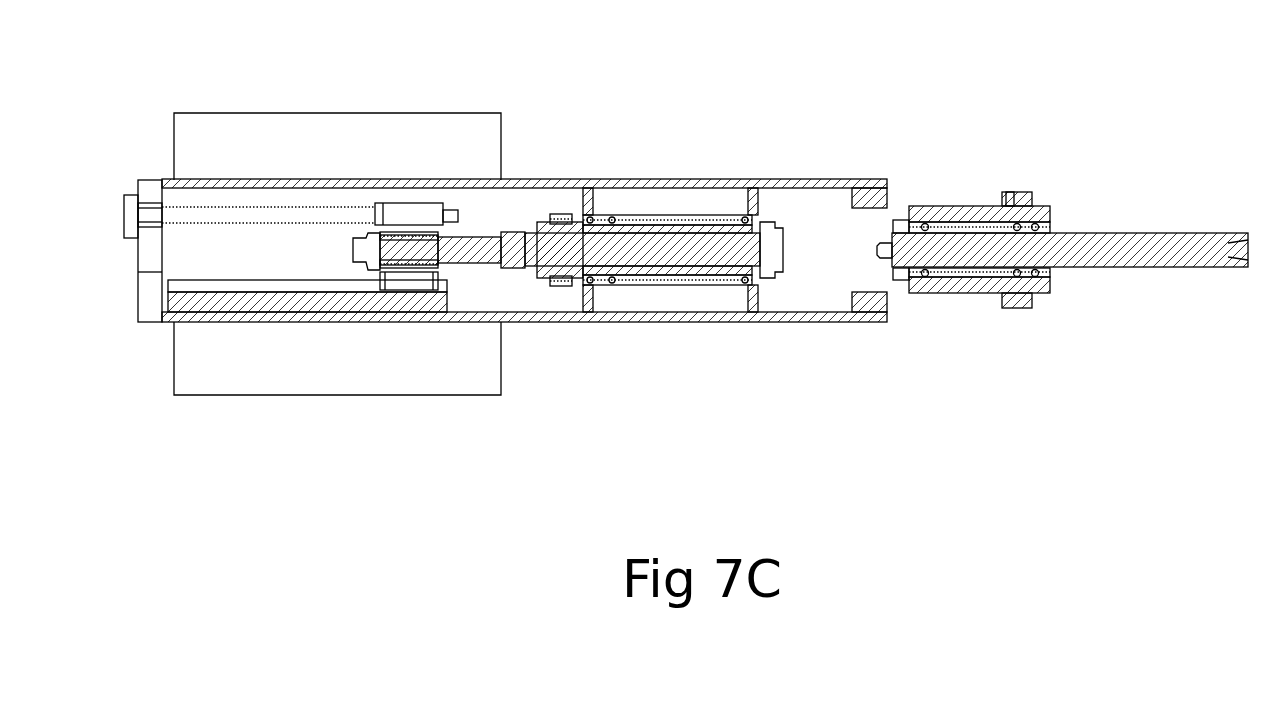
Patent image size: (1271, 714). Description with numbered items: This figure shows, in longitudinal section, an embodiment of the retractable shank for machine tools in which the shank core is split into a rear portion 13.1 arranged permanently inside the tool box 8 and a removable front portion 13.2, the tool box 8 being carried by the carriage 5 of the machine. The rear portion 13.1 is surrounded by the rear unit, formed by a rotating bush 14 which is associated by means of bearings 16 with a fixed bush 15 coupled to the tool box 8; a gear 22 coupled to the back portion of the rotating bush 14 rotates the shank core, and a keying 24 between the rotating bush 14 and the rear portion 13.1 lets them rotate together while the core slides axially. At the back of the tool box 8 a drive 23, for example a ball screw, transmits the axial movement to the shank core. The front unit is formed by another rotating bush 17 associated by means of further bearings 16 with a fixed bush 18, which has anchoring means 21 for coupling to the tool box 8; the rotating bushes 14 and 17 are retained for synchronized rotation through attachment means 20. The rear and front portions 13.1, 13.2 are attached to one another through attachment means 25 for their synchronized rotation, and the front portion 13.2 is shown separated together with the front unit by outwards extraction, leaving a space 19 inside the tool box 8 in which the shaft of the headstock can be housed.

The carriage 5 is at (333, 145).
The tool box 8 is at (750, 313).
The rear portion 13.1 is at (665, 250).
The front portion 13.2 is at (1083, 256).
The rotating bush 14 is at (655, 232).
The fixed bush 15 is at (702, 215).
The bearings 16 is at (979, 349).
The rotating bush 17 is at (975, 222).
The fixed bush 18 is at (1040, 207).
The space 19 is at (820, 258).
The attachment means 20 is at (900, 231).
The anchoring means 21 is at (1011, 195).
The gear 22 is at (560, 213).
The drive 23 is at (235, 213).
The keying 24 is at (560, 287).
The attachment means 25 is at (885, 256).